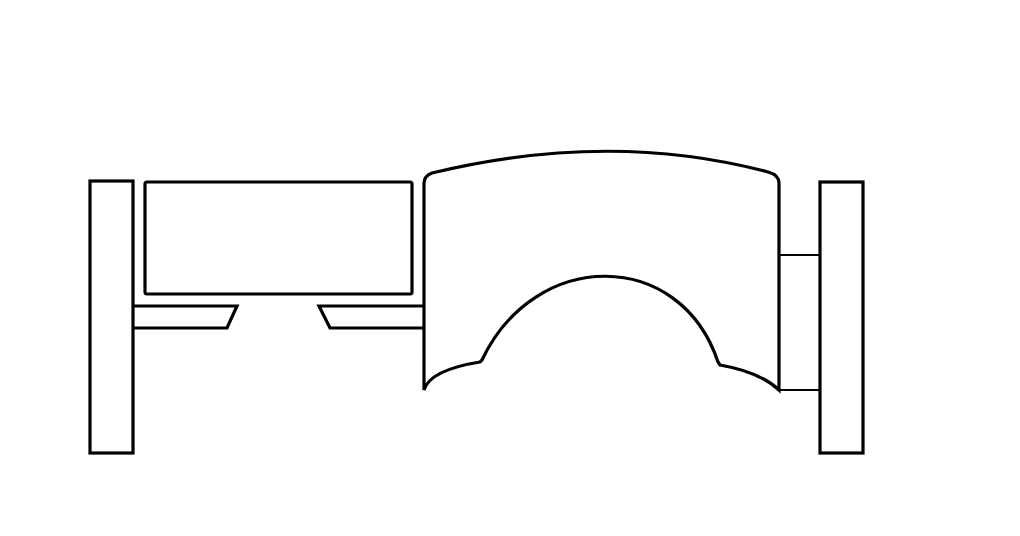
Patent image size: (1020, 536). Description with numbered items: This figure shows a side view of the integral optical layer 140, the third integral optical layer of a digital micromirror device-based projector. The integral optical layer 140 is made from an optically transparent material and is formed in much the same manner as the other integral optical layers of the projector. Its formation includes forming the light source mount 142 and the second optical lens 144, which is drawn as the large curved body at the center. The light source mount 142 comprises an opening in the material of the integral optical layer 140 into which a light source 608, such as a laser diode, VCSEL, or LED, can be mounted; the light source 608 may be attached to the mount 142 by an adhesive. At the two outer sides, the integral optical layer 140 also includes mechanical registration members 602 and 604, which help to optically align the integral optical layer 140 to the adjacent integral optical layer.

The integral optical layer 140 is at (222, 79).
The light source mount 142 is at (277, 334).
The second optical lens 144 is at (604, 150).
The mechanical registration member 602 is at (89, 315).
The mechanical registration member 604 is at (865, 315).
The light source 608 is at (277, 182).